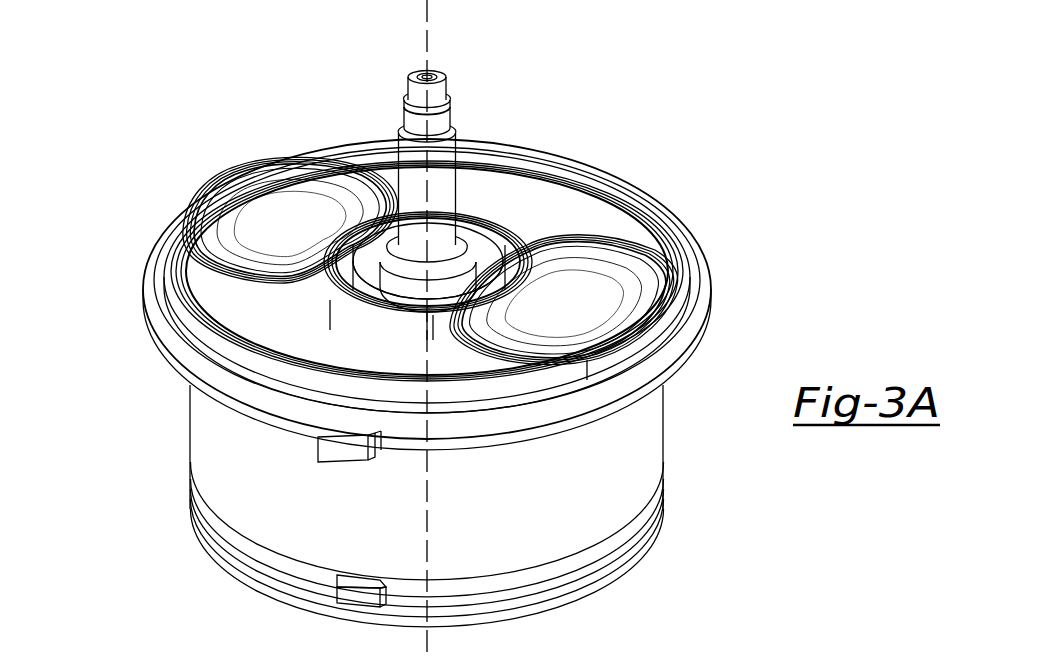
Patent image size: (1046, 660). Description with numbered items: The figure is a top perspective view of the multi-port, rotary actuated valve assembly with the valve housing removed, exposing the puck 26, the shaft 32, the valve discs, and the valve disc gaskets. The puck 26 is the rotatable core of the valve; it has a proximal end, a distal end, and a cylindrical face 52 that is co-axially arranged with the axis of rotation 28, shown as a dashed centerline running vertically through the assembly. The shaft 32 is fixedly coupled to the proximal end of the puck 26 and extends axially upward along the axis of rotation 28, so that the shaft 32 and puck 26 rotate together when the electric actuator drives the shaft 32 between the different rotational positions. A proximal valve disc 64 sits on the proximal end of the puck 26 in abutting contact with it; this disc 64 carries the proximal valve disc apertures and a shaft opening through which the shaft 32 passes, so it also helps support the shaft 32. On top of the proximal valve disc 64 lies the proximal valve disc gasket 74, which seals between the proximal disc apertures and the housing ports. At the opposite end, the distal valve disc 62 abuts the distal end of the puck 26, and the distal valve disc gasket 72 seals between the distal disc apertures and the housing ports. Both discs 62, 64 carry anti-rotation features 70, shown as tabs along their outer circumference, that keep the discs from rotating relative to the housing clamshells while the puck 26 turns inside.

The puck 26 is at (190, 445).
The axis of rotation 28 is at (427, 28).
The shaft 32 is at (413, 118).
The cylindrical face 52 is at (618, 464).
The distal valve disc 62 is at (593, 557).
The proximal valve disc 64 is at (150, 300).
The anti-rotation features 70 is at (342, 447).
The distal valve disc gasket 72 is at (545, 593).
The proximal valve disc gasket 74 is at (635, 190).